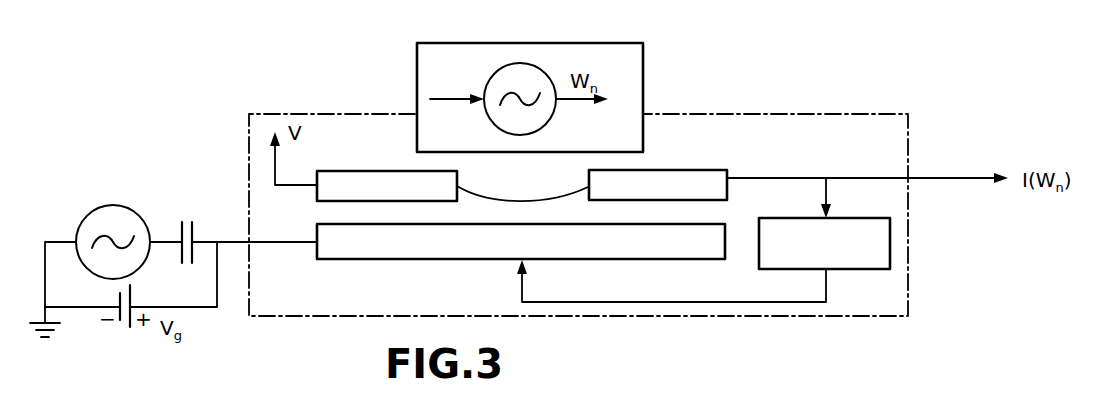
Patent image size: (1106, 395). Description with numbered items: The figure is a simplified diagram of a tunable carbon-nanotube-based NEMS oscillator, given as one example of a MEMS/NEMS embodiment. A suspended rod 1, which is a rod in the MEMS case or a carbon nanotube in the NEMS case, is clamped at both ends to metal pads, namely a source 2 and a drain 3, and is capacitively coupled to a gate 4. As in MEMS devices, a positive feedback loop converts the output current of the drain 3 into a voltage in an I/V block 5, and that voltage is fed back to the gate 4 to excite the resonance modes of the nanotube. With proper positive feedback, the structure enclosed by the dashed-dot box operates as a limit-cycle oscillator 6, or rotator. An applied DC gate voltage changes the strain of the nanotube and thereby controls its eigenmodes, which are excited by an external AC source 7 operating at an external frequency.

The suspended rod 1 is at (498, 197).
The source 2 is at (332, 171).
The drain 3 is at (668, 170).
The gate 4 is at (365, 260).
The I/V block 5 is at (778, 270).
The limit-cycle oscillator 6 is at (798, 113).
The external AC source 7 is at (83, 218).